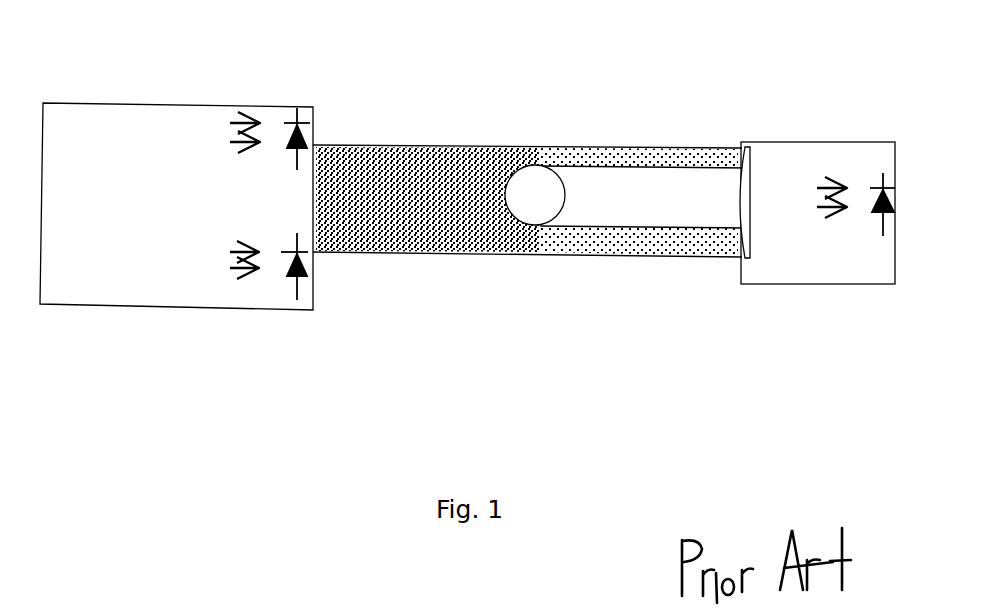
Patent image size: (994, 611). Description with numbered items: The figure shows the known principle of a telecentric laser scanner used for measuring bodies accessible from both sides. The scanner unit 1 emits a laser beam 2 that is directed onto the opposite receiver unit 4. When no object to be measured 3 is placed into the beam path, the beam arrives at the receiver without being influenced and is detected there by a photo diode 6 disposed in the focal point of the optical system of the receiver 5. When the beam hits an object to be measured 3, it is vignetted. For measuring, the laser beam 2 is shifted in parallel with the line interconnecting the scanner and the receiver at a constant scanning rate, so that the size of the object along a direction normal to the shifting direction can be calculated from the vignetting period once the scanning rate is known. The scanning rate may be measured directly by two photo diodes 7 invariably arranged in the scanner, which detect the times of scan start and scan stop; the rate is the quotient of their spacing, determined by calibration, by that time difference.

The scanner unit 1 is at (139, 92).
The laser beam 2 is at (450, 140).
The object to be measured 3 is at (548, 152).
The receiver unit 4 is at (793, 136).
The optical system of the receiver 5 is at (741, 262).
The photo diode 6 is at (857, 233).
The photo diodes 7 is at (266, 245).